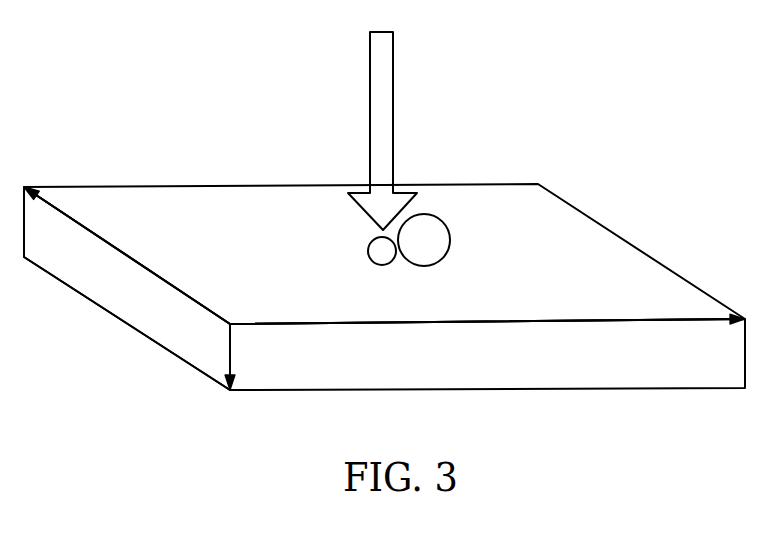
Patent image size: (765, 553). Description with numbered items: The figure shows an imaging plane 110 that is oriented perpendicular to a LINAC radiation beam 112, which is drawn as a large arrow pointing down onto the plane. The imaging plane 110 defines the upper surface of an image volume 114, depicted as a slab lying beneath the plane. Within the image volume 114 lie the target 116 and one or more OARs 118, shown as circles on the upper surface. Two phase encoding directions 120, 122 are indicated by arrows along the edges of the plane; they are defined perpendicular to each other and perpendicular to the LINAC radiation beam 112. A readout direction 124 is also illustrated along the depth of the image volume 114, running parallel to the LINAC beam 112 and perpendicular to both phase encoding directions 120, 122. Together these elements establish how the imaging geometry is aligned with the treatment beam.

The imaging plane 110 is at (590, 233).
The LINAC radiation beam 112 is at (395, 47).
The image volume 114 is at (118, 303).
The target 116 is at (383, 259).
The OAR 118 is at (443, 235).
The phase encoding direction 120 is at (565, 318).
The phase encoding direction 122 is at (120, 252).
The readout direction 124 is at (233, 358).